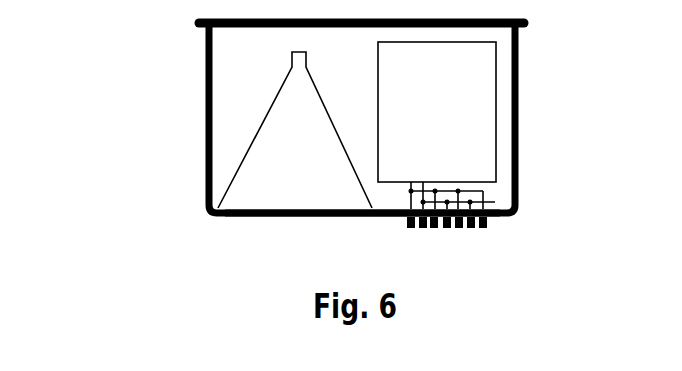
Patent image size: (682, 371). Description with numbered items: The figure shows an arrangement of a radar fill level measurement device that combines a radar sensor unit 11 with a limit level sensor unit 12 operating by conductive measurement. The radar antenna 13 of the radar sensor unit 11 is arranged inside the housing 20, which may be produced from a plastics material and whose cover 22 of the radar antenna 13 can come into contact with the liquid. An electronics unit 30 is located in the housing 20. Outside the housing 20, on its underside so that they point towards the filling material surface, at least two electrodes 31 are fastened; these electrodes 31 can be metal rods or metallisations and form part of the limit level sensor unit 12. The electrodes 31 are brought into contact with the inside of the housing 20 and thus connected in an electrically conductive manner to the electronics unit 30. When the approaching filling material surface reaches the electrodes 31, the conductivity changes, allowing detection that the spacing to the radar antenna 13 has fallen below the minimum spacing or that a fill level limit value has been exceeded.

The radar sensor unit 11 is at (262, 100).
The limit level sensor unit 12 is at (493, 193).
The radar antenna 13 is at (268, 152).
The housing 20 is at (516, 144).
The cover 22 is at (258, 218).
The electronics unit 30 is at (483, 70).
The electrodes 31 is at (468, 237).